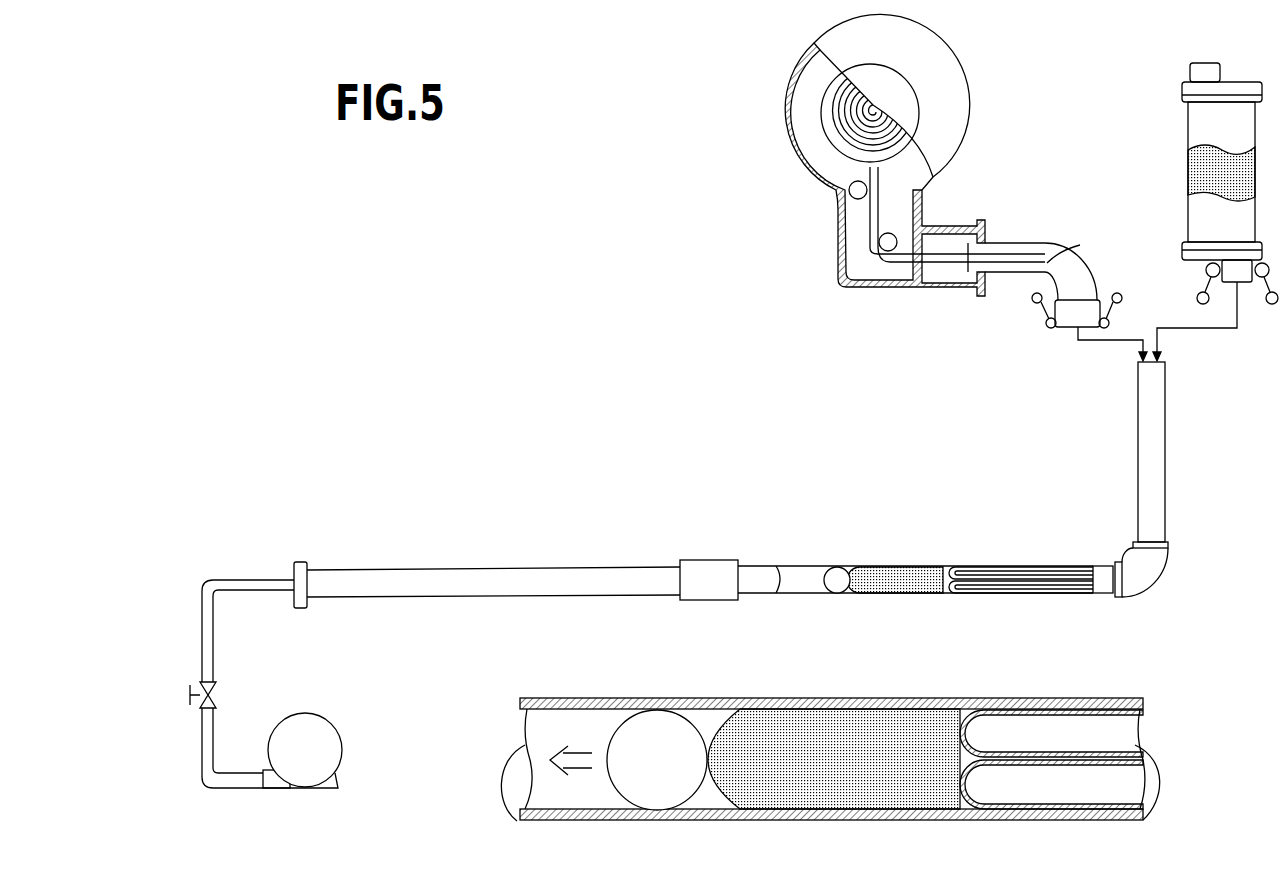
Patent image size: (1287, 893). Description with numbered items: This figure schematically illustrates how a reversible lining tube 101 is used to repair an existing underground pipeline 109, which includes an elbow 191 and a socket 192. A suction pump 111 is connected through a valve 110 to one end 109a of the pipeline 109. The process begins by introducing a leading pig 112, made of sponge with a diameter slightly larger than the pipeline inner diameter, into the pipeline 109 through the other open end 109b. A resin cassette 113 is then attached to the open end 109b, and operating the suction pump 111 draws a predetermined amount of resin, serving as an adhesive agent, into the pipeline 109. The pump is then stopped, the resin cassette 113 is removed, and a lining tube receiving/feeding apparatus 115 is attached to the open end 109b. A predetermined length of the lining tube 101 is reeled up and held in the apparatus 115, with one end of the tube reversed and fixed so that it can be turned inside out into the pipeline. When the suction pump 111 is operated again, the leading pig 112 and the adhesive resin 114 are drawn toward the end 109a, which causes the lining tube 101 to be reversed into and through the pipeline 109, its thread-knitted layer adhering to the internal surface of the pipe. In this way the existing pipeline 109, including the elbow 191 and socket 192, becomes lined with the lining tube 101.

The reversible lining tube 101 is at (877, 212).
The existing pipeline 109 is at (590, 580).
The one end of the pipeline 109a is at (299, 562).
The open end of the pipeline 109b is at (1165, 360).
The valve 110 is at (190, 696).
The suction pump 111 is at (335, 735).
The leading pig 112 is at (838, 569).
The resin cassette 113 is at (1195, 123).
The adhesive resin 114 is at (895, 577).
The lining tube receiving/feeding apparatus 115 is at (790, 88).
The elbow 191 is at (1150, 569).
The socket 192 is at (710, 570).